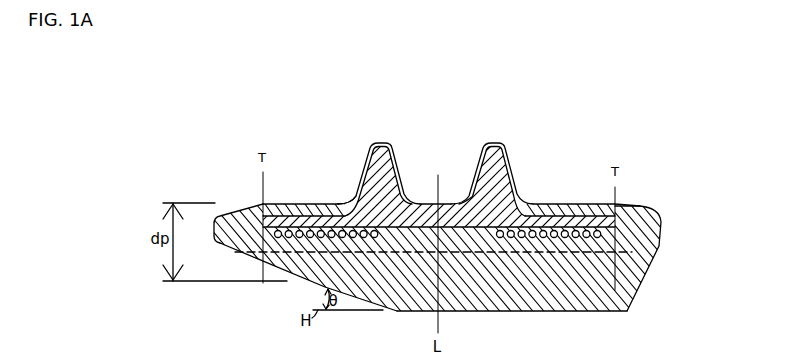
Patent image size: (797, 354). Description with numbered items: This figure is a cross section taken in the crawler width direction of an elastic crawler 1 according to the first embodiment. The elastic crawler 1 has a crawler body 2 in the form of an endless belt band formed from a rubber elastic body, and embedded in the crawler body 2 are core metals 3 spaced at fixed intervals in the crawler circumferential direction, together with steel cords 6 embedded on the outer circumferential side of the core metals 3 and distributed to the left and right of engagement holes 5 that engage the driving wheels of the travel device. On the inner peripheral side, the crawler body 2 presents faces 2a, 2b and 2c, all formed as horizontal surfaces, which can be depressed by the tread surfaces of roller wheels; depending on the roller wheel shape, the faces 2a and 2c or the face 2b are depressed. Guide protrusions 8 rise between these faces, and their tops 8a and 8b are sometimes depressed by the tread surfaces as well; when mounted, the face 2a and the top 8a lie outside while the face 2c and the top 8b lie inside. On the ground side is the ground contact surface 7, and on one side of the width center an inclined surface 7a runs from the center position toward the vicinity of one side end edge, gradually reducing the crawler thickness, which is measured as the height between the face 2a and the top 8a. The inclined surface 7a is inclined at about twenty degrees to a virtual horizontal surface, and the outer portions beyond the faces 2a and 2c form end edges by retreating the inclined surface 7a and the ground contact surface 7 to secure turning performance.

The elastic crawler 1 is at (632, 162).
The crawler body 2 is at (238, 222).
The face 2a is at (313, 204).
The face 2b is at (432, 204).
The face 2c is at (585, 205).
The core metal 3 is at (382, 177).
The engagement hole 5 is at (482, 298).
The steel cord 6 is at (343, 205).
The ground contact surface 7 is at (553, 312).
The inclined surface 7a is at (325, 287).
The guide protrusion 8 is at (435, 136).
The top 8a is at (389, 140).
The top 8b is at (490, 140).